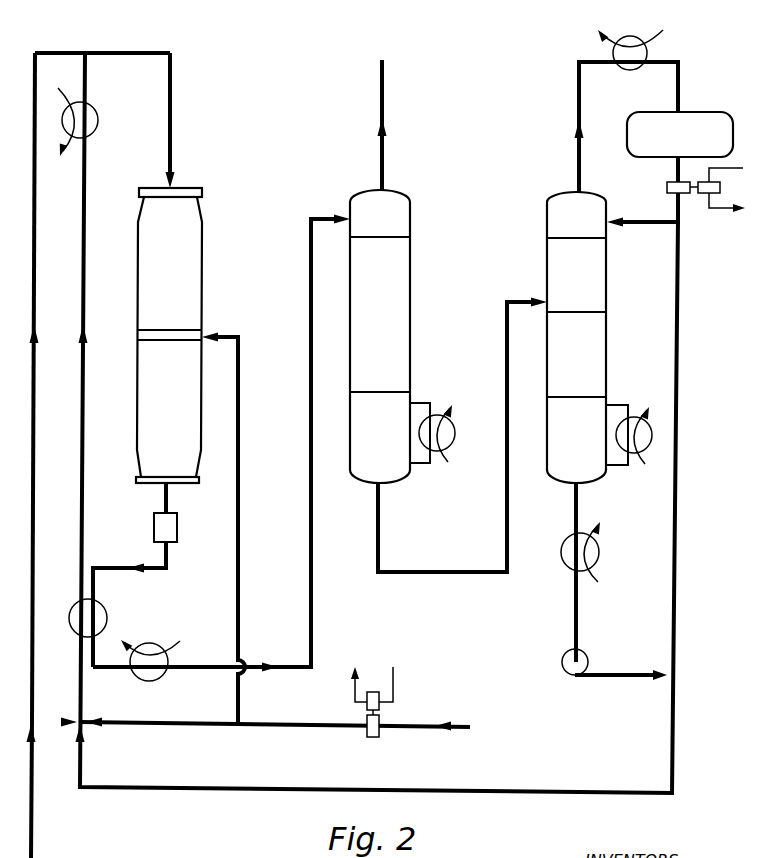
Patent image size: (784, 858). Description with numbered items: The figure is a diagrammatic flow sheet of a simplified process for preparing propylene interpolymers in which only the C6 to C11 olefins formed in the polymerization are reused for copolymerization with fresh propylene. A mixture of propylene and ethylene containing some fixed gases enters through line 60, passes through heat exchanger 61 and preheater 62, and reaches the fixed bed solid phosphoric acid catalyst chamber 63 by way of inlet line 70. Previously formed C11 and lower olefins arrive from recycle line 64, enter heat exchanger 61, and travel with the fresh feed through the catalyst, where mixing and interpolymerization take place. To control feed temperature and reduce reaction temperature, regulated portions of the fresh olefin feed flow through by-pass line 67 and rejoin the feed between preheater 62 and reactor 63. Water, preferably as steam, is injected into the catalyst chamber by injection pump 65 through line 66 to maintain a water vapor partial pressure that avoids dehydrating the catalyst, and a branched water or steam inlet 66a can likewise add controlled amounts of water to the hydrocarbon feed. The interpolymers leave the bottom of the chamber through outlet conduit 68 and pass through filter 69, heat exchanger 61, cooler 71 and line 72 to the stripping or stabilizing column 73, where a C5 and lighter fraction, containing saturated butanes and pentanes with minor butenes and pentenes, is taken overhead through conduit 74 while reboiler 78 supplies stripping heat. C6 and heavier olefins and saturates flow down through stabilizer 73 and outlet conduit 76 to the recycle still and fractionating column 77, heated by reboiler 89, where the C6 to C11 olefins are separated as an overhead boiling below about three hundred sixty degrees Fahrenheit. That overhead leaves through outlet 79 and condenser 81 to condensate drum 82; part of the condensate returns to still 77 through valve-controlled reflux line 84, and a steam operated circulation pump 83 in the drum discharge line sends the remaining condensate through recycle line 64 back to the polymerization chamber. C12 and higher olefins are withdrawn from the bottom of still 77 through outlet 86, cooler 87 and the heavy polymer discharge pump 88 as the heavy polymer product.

The line 60 is at (33, 818).
The heat exchanger 61 is at (105, 608).
The preheater 62 is at (96, 112).
The catalyst chamber 63 is at (202, 268).
The recycle line 64 is at (680, 370).
The injection pump 65 is at (379, 735).
The line 66 is at (240, 405).
The branched water or steam inlet 66a is at (148, 725).
The by-pass line 67 is at (37, 438).
The outlet conduit 68 is at (168, 498).
The filter 69 is at (177, 535).
The inlet line 70 is at (172, 107).
The cooler 71 is at (150, 681).
The line 72 is at (311, 498).
The stabilizing column 73 is at (410, 268).
The conduit 74 is at (385, 62).
The outlet conduit 76 is at (380, 527).
The recycle still 77 is at (606, 288).
The reboiler 78 is at (437, 452).
The outlet 79 is at (575, 104).
The condenser 81 is at (648, 48).
The condensate drum 82 is at (693, 112).
The circulation pump 83 is at (663, 187).
The reflux line 84 is at (637, 227).
The outlet 86 is at (578, 502).
The cooler 87 is at (568, 568).
The heavy polymer discharge pump 88 is at (560, 661).
The reboiler 89 is at (634, 455).